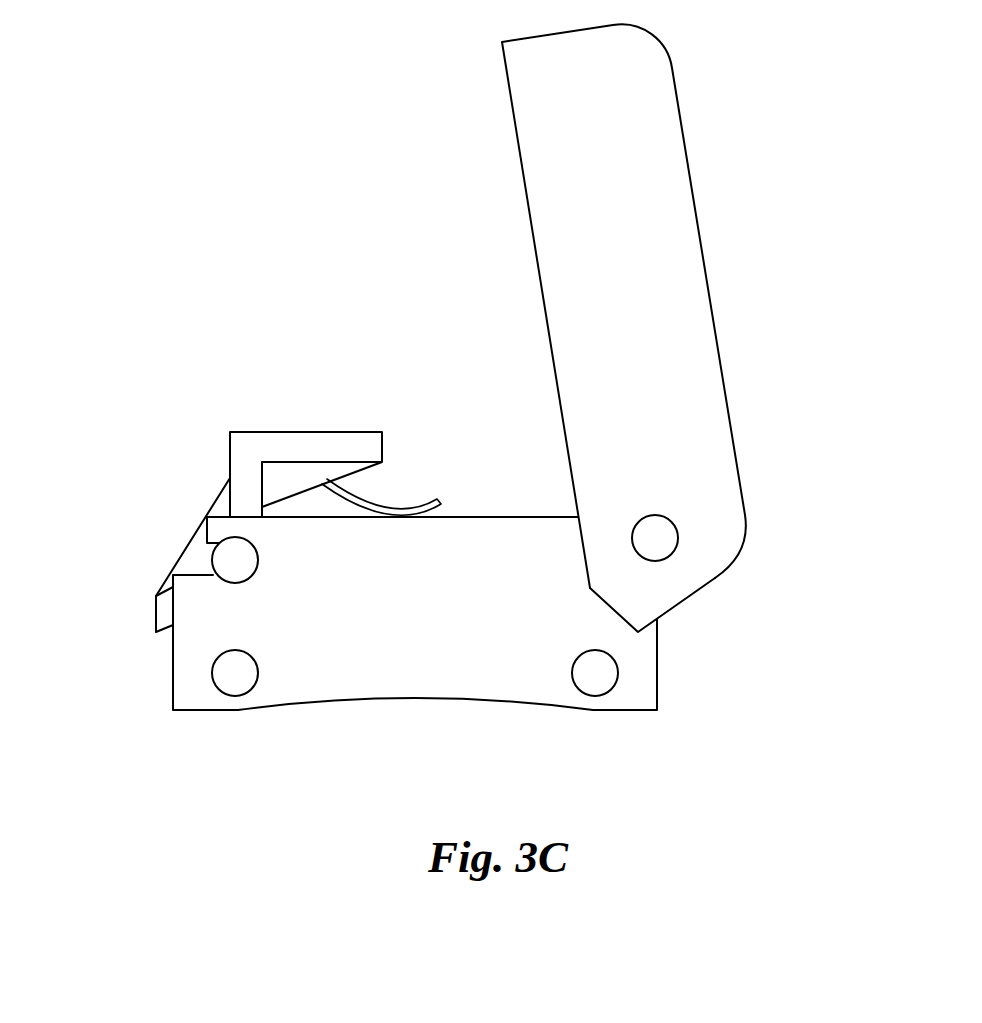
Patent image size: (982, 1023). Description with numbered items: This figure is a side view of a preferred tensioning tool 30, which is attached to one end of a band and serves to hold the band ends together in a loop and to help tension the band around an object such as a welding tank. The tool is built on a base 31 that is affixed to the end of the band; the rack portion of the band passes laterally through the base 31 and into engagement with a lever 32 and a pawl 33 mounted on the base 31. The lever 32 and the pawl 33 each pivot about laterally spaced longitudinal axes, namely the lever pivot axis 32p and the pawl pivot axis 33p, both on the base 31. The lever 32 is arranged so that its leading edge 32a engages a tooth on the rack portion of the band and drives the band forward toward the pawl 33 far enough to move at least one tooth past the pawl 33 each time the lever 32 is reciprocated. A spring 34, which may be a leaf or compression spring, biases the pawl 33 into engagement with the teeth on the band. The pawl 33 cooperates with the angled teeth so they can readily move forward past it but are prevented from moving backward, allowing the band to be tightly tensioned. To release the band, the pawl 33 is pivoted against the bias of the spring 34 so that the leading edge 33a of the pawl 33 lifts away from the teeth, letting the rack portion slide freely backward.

The tensioning tool 30 is at (268, 160).
The base 31 is at (487, 662).
The lever 32 is at (637, 127).
The lever pivot axis 32p is at (655, 538).
The leading edge of lever 32a is at (638, 632).
The pawl 33 is at (242, 445).
The pawl pivot axis 33p is at (232, 562).
The leading edge of pawl 33a is at (157, 634).
The spring 34 is at (375, 502).